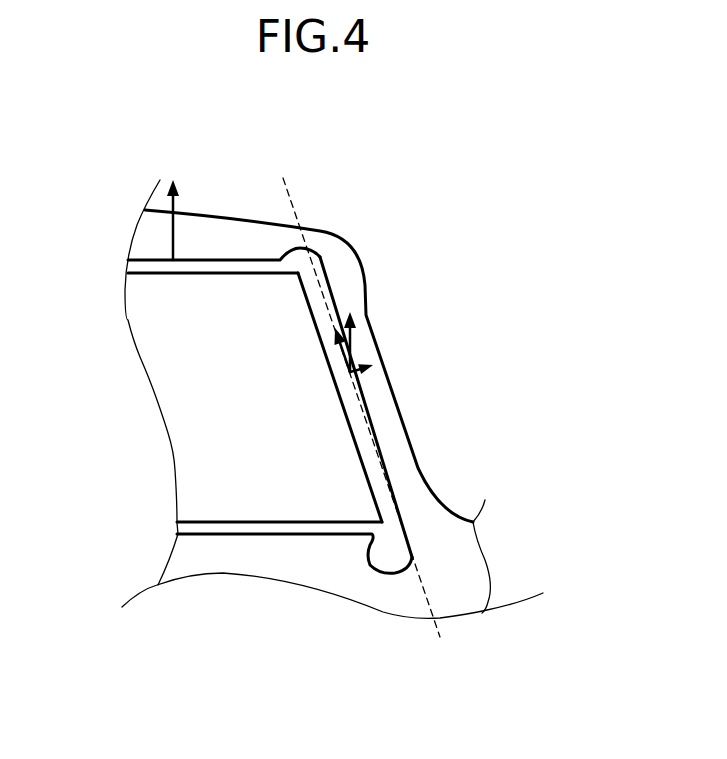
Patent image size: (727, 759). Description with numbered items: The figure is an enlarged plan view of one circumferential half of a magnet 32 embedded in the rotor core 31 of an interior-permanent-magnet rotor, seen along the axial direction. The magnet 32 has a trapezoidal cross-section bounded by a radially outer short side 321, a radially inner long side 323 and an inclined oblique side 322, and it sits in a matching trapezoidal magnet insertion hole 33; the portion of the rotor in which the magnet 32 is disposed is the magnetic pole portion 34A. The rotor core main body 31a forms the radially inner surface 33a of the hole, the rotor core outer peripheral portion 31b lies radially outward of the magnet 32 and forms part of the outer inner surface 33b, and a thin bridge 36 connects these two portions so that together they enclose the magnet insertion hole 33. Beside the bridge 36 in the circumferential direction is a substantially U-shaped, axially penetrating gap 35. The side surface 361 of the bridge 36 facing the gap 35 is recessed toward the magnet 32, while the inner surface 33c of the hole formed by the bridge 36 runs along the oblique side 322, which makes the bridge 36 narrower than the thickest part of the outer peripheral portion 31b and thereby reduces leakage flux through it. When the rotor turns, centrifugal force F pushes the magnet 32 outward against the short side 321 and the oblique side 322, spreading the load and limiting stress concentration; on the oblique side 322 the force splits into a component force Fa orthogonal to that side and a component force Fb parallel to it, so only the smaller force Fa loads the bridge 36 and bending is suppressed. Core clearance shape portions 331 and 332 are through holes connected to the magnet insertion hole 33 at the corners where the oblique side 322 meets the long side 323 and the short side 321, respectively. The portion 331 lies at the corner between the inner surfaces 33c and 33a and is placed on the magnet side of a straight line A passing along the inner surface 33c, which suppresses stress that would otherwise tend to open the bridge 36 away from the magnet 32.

The rotor core 31 is at (467, 574).
The rotor core main body 31a is at (323, 560).
The rotor core outer peripheral portion 31b is at (226, 231).
The magnet 32 is at (175, 362).
The short side 321 is at (235, 270).
The oblique side 322 is at (370, 478).
The long side 323 is at (272, 525).
The magnet insertion hole 33 is at (187, 537).
The inner surface 33a is at (243, 532).
The inner surface 33b is at (197, 266).
The inner surface 33c is at (377, 447).
The core clearance shape portion 331 is at (389, 577).
The core clearance shape portion 332 is at (318, 252).
The magnetic pole portion 34A is at (258, 217).
The gap 35 is at (460, 387).
The bridge 36 is at (387, 420).
The side surface 361 is at (413, 448).
The straight line A is at (440, 633).
The centrifugal force F is at (172, 228).
The component force Fa is at (355, 375).
The component force Fb is at (343, 350).